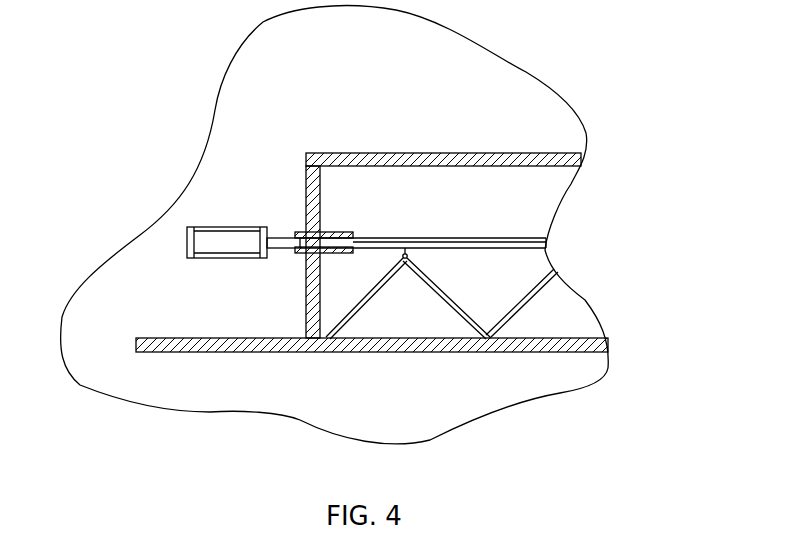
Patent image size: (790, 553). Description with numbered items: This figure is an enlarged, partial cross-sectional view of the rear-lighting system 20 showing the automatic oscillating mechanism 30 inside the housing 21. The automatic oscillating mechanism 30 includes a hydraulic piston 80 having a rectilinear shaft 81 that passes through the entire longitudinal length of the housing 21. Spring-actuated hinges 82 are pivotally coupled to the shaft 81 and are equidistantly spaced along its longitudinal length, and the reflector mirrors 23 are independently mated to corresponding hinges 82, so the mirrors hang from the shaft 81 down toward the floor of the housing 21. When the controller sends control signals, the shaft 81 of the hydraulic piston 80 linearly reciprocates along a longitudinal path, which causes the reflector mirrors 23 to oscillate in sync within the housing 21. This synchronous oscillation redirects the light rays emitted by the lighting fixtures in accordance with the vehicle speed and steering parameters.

The rear-lighting system 20 is at (186, 121).
The housing 21 is at (578, 352).
The reflector mirrors 23 is at (556, 306).
The automatic oscillating mechanism 30 is at (386, 128).
The hydraulic piston 80 is at (190, 236).
The rectilinear shaft 81 is at (462, 238).
The spring-actuated hinges 82 is at (405, 254).